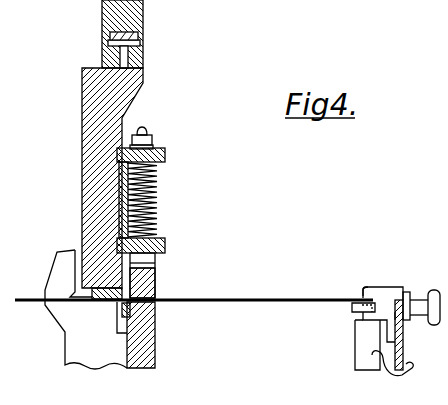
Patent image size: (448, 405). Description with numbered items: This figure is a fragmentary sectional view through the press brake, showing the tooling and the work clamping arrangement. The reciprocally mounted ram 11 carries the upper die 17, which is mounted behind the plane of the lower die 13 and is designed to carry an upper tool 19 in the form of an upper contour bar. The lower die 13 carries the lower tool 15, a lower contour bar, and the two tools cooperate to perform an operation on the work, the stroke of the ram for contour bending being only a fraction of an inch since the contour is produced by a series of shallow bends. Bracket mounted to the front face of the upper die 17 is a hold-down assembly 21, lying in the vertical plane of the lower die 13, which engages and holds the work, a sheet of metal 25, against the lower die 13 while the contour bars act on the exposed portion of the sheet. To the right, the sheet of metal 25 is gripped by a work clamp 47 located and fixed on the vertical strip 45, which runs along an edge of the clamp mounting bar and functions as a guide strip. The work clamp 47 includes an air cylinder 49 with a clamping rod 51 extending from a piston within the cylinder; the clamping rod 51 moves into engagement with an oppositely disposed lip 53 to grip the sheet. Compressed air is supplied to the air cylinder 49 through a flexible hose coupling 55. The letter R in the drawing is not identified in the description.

The ram 11 is at (143, 15).
The lower die 13 is at (156, 333).
The tool 15 is at (119, 318).
The upper die 17 is at (82, 164).
The tool 19 is at (101, 299).
The hold-down assembly 21 is at (186, 217).
The sheet of metal 25 is at (232, 299).
The vertical strip 45 is at (403, 351).
The work clamp 47 is at (400, 285).
The air cylinder 49 is at (361, 343).
The clamping rod 51 is at (357, 305).
The lip 53 is at (364, 290).
The flexible hose coupling 55 is at (373, 362).
The knob R is at (424, 295).